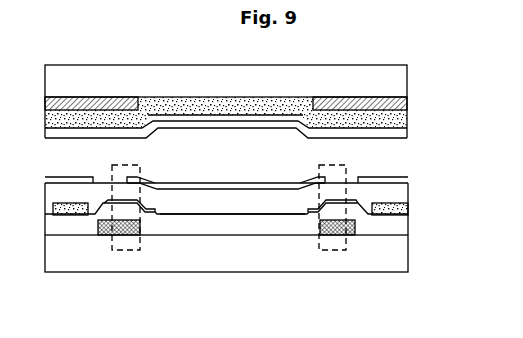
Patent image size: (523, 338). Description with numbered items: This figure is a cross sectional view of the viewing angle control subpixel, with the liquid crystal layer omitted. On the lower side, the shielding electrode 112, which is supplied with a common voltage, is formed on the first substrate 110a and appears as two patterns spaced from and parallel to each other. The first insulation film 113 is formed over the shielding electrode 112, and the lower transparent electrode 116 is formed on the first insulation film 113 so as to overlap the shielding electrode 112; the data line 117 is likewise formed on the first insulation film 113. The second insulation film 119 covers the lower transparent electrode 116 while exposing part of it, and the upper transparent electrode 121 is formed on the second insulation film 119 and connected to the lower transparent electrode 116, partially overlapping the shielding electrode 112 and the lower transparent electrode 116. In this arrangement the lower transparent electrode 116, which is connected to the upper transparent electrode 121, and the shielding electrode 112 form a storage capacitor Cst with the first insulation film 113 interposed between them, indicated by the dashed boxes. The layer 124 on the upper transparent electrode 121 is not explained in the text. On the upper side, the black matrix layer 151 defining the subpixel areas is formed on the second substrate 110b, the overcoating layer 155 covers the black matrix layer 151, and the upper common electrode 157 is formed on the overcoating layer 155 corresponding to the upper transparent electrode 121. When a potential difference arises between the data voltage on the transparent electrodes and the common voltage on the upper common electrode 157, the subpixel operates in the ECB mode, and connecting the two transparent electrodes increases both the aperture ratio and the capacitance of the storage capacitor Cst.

The first substrate 110a is at (403, 255).
The second substrate 110b is at (402, 81).
The shielding electrode 112 is at (121, 236).
The first insulation film 113 is at (167, 230).
The lower transparent electrode 116 is at (312, 215).
The data line 117 is at (403, 208).
The second insulation film 119 is at (216, 206).
The upper transparent electrode 121 is at (259, 186).
The pixel electrode 124 is at (402, 180).
The black matrix layer 151 is at (402, 103).
The overcoating layer 155 is at (403, 122).
The upper common electrode 157 is at (403, 136).
The storage capacitor Cst is at (346, 252).